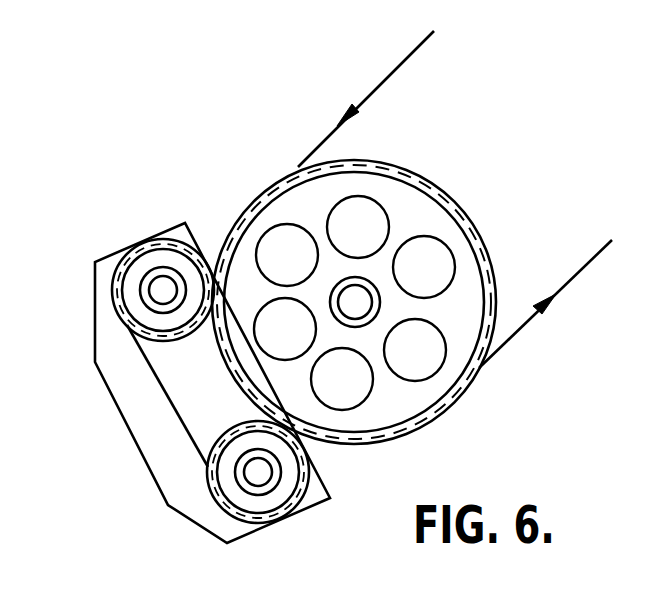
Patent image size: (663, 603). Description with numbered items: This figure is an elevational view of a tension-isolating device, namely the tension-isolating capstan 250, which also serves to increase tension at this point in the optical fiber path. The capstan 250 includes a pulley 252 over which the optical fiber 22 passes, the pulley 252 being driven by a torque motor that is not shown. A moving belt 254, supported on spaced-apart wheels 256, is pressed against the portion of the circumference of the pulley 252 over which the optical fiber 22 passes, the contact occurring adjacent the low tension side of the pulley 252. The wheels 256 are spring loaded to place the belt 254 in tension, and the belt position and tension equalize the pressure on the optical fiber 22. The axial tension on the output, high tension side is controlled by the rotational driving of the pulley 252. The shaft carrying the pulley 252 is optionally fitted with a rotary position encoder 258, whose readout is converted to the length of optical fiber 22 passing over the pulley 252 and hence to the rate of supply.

The optical fiber 22 is at (387, 76).
The tension-isolating capstan 250 is at (142, 158).
The pulley 252 is at (400, 192).
The moving belt 254 is at (168, 280).
The wheels 256 is at (138, 280).
The rotary position encoder 258 is at (373, 297).